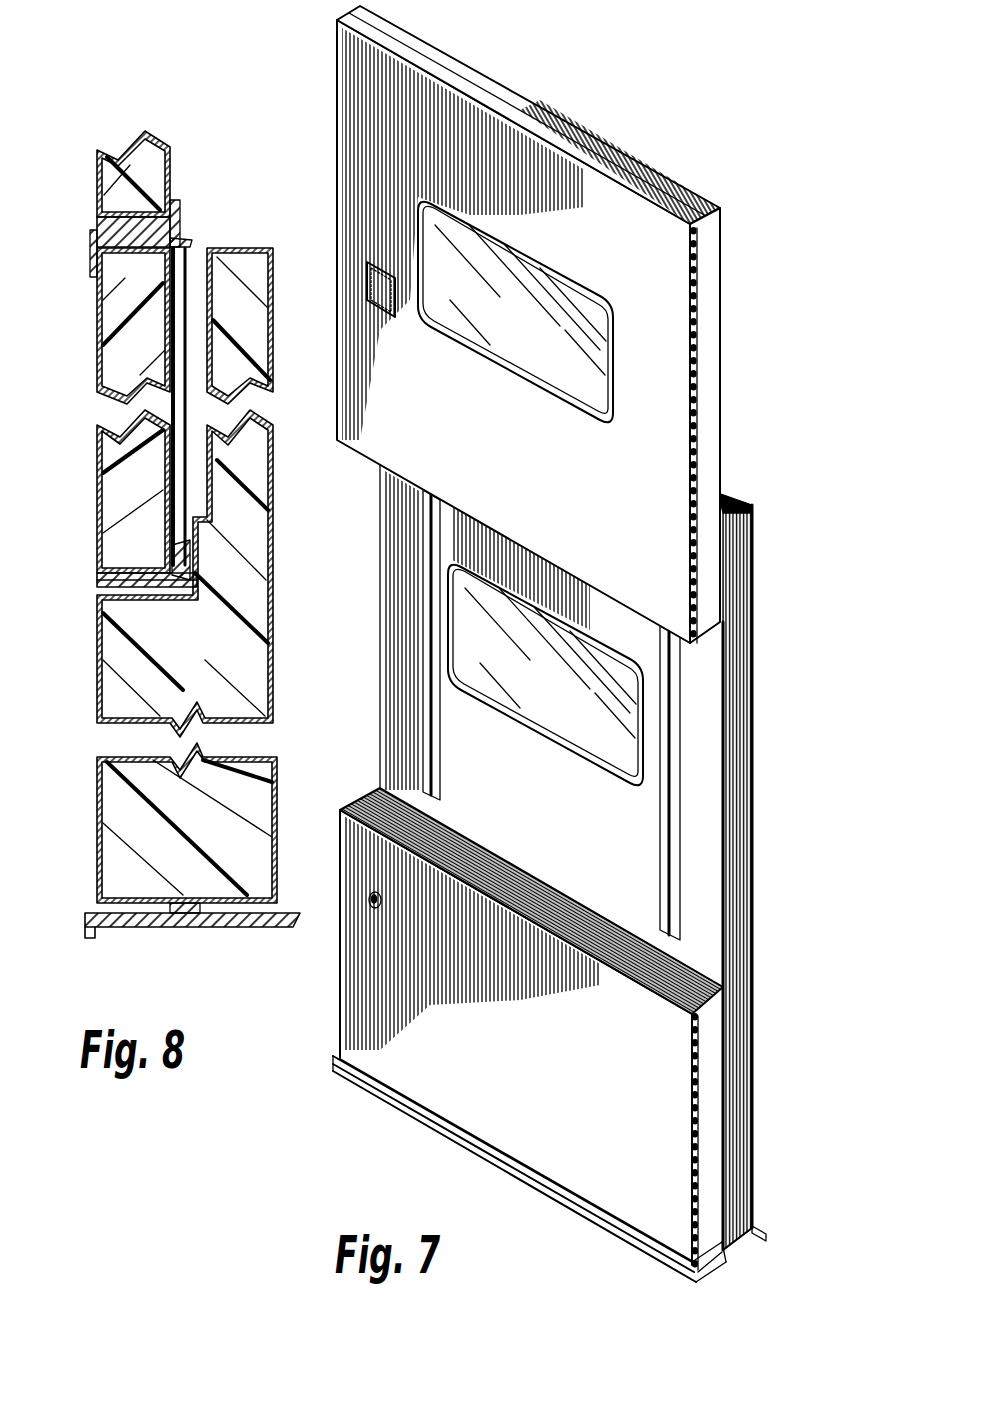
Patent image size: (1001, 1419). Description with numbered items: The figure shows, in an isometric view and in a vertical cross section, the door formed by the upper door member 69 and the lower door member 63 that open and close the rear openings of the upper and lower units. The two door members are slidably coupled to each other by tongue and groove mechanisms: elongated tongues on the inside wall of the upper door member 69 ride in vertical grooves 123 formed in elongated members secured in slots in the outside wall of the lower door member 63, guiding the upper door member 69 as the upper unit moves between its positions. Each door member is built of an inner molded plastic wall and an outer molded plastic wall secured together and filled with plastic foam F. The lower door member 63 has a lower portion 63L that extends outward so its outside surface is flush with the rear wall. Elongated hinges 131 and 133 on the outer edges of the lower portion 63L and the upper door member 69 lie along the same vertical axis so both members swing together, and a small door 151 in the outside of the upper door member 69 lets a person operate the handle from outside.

In FIG. 7, the lower door member 63 is at (532, 873).
In FIG. 8, the lower door member 63 is at (200, 674).
In FIG. 7, the upper door member 69 is at (563, 324).
In FIG. 8, the upper door member 69 is at (155, 377).
In FIG. 7, the grooves 123 is at (430, 683).
In FIG. 7, the elongated hinge 131 is at (675, 1083).
In FIG. 7, the elongated hinge 133 is at (697, 443).
In FIG. 7, the small door 151 is at (366, 280).
In FIG. 7, the lower portion of door member 63 63L is at (377, 962).
In FIG. 8, the plastic foam F is at (123, 284).